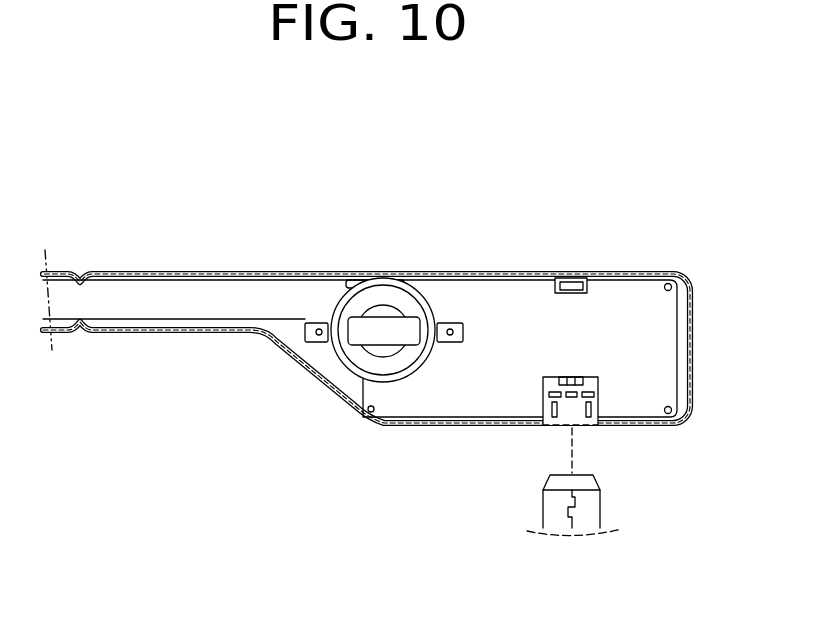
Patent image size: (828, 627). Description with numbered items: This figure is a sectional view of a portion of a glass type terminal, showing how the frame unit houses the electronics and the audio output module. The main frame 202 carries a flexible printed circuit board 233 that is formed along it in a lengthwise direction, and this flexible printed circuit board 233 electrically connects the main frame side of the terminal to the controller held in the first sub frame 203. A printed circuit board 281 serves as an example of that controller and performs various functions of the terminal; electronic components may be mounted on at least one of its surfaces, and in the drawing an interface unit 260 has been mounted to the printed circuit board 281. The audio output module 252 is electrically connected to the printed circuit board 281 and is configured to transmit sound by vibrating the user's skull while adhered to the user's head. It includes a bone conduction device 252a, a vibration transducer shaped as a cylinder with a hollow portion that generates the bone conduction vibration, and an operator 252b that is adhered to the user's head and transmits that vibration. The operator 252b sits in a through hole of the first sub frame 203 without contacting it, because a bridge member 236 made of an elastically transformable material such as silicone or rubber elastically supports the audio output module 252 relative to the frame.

The main frame 202 is at (65, 271).
The first sub frame 203 is at (120, 271).
The flexible printed circuit board 233 is at (137, 310).
The bridge member 236 is at (427, 310).
The audio output module 252 is at (458, 215).
The bone conduction device 252a is at (362, 303).
The operator 252b is at (384, 331).
The interface unit 260 is at (597, 404).
The printed circuit board 281 is at (643, 297).